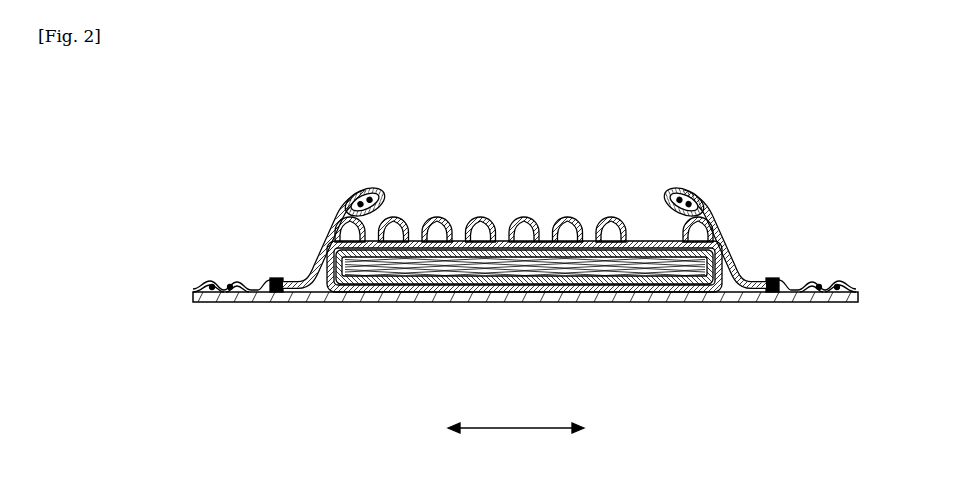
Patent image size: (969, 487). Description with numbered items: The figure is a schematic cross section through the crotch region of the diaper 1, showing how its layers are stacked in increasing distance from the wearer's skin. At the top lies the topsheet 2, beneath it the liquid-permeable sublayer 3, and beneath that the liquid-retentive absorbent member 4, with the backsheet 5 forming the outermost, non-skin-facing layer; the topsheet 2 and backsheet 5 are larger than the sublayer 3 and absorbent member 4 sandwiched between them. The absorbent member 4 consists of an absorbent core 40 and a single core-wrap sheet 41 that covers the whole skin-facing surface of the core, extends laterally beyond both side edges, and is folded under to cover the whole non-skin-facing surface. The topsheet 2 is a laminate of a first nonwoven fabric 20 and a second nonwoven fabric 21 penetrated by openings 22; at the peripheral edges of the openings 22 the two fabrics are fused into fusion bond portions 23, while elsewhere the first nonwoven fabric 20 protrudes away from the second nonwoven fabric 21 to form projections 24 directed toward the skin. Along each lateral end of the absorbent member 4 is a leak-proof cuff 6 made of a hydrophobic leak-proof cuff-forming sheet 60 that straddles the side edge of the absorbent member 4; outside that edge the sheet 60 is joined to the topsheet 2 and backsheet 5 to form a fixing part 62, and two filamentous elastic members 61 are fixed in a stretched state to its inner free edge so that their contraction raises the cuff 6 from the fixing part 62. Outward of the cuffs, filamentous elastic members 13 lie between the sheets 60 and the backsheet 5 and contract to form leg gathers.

The diaper 1 is at (803, 143).
The topsheet 2 is at (524, 174).
The first nonwoven fabric 20 is at (483, 217).
The second nonwoven fabric 21 is at (498, 224).
The opening 22 is at (437, 218).
The fusion bond portion 23 is at (546, 240).
The projection 24 is at (395, 220).
The sublayer 3 is at (524, 321).
The absorbent member 4 is at (524, 325).
The absorbent core 40 is at (626, 284).
The core-wrap sheet 41 is at (667, 277).
The backsheet 5 is at (350, 302).
The leak-proof cuff 6 is at (526, 246).
The leak-proof cuff-forming sheet 60 is at (325, 242).
The leak-proof cuff-forming elastic member 61 is at (365, 200).
The fixing part 62 is at (277, 300).
The elastic member 13 is at (223, 291).